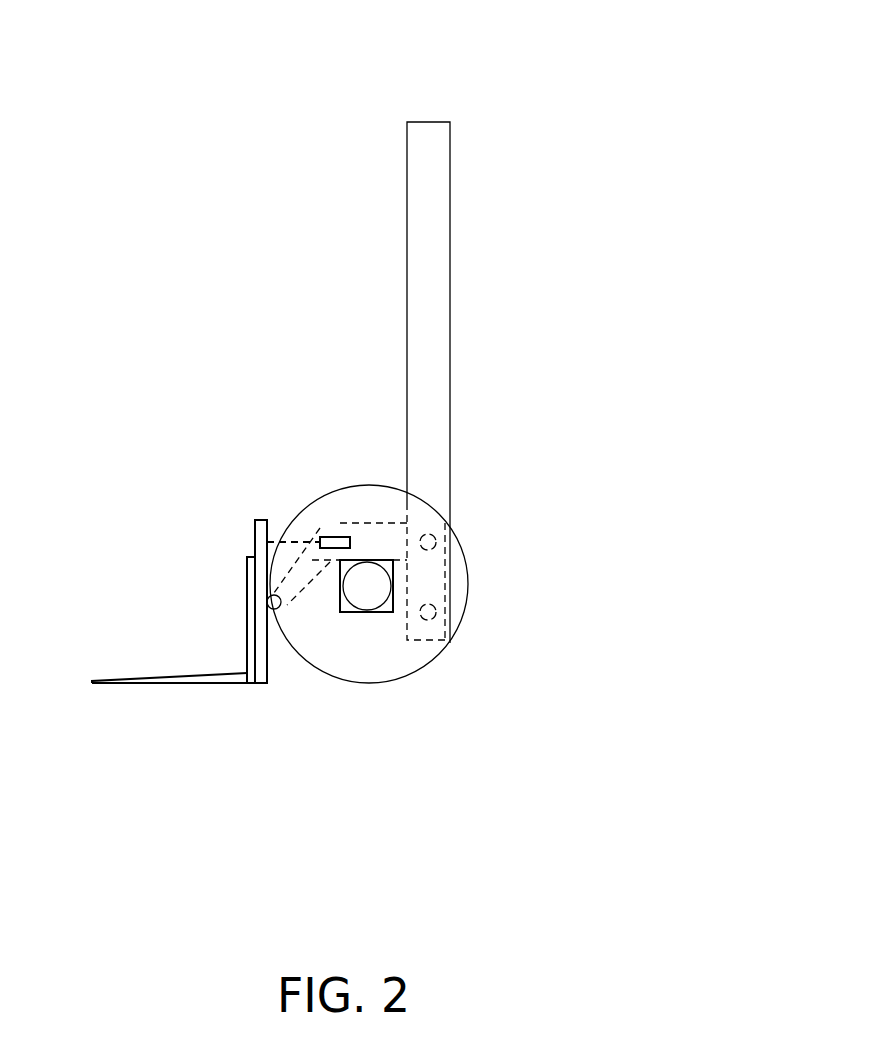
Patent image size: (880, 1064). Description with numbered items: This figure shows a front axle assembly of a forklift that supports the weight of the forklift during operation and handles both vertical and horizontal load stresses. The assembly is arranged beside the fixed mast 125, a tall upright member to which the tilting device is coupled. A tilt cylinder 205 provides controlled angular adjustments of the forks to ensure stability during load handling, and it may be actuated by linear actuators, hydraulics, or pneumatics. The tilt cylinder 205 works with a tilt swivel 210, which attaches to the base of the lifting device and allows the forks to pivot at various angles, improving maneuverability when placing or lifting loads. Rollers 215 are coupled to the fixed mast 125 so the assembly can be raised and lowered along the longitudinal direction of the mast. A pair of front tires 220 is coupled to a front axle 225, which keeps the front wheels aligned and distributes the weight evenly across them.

The fixed mast 125 is at (450, 122).
The tilt cylinder 205 is at (328, 533).
The tilt swivel 210 is at (270, 604).
The rollers 215 is at (436, 531).
The front tires 220 is at (426, 667).
The front axle 225 is at (369, 612).